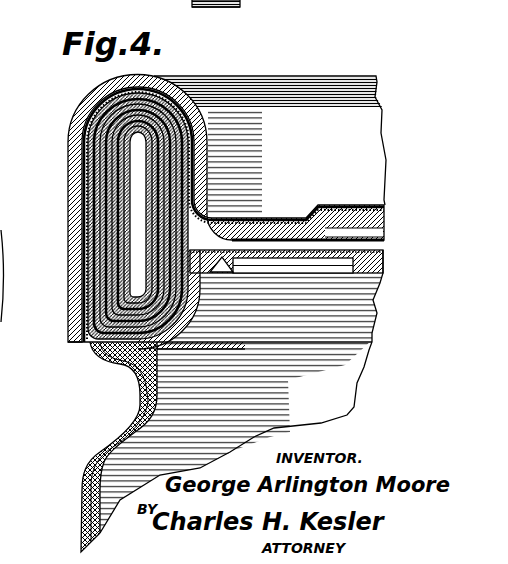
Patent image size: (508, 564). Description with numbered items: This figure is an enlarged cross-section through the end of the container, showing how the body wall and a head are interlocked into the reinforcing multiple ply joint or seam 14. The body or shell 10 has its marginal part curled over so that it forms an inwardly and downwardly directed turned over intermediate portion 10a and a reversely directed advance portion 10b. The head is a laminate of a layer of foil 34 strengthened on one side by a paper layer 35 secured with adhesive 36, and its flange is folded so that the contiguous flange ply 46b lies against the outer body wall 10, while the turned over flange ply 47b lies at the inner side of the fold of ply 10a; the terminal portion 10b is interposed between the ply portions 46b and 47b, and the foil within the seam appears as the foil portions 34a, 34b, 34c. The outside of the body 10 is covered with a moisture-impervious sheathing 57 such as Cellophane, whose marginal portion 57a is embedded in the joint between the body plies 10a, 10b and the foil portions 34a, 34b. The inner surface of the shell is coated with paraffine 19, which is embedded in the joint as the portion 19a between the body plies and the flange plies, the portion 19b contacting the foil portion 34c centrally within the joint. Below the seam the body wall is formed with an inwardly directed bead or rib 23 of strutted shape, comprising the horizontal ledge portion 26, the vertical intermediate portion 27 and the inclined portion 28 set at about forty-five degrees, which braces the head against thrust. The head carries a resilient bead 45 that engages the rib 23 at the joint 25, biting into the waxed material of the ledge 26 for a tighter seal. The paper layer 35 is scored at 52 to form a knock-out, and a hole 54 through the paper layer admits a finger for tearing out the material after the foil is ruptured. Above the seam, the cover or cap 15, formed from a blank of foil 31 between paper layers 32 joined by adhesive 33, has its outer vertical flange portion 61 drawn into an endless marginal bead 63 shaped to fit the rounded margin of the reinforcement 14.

The body or shell 10 is at (81, 508).
The turned over intermediate portion 10a is at (200, 158).
The advance portion 10b is at (130, 196).
The multiple ply joint or seam 14 is at (165, 98).
The cover or cap 15 is at (344, 119).
The paraffine layer 19 is at (225, 403).
The embedded paraffine portion 19a is at (182, 103).
The paraffine layer portion 19b is at (190, 138).
The inwardly directed bead or rib 23 is at (130, 392).
The joint 25 is at (123, 366).
The ledge portion 26 is at (103, 357).
The vertical intermediate portion 27 is at (195, 383).
The inclined portion 28 is at (133, 441).
The layer of foil 31 is at (355, 205).
The layers of paper 32 is at (306, 214).
The adhesive 33 is at (283, 221).
The layer of foil 34 is at (343, 258).
The foil portion 34a is at (190, 290).
The foil portion 34b is at (120, 217).
The foil portion 34c is at (196, 208).
The paper layer 35 is at (379, 281).
The adhesive 36 is at (280, 258).
The rib or bead 45 is at (90, 344).
The flange ply 46b is at (115, 240).
The turned over flange ply 47b is at (203, 178).
The scoring 52 is at (222, 268).
The hole 54 is at (310, 258).
The sheathing 57 is at (100, 446).
The marginal portion of sheathing 57a is at (183, 318).
The outer vertical flange portion 61 is at (75, 157).
The marginal bead 63 is at (120, 78).